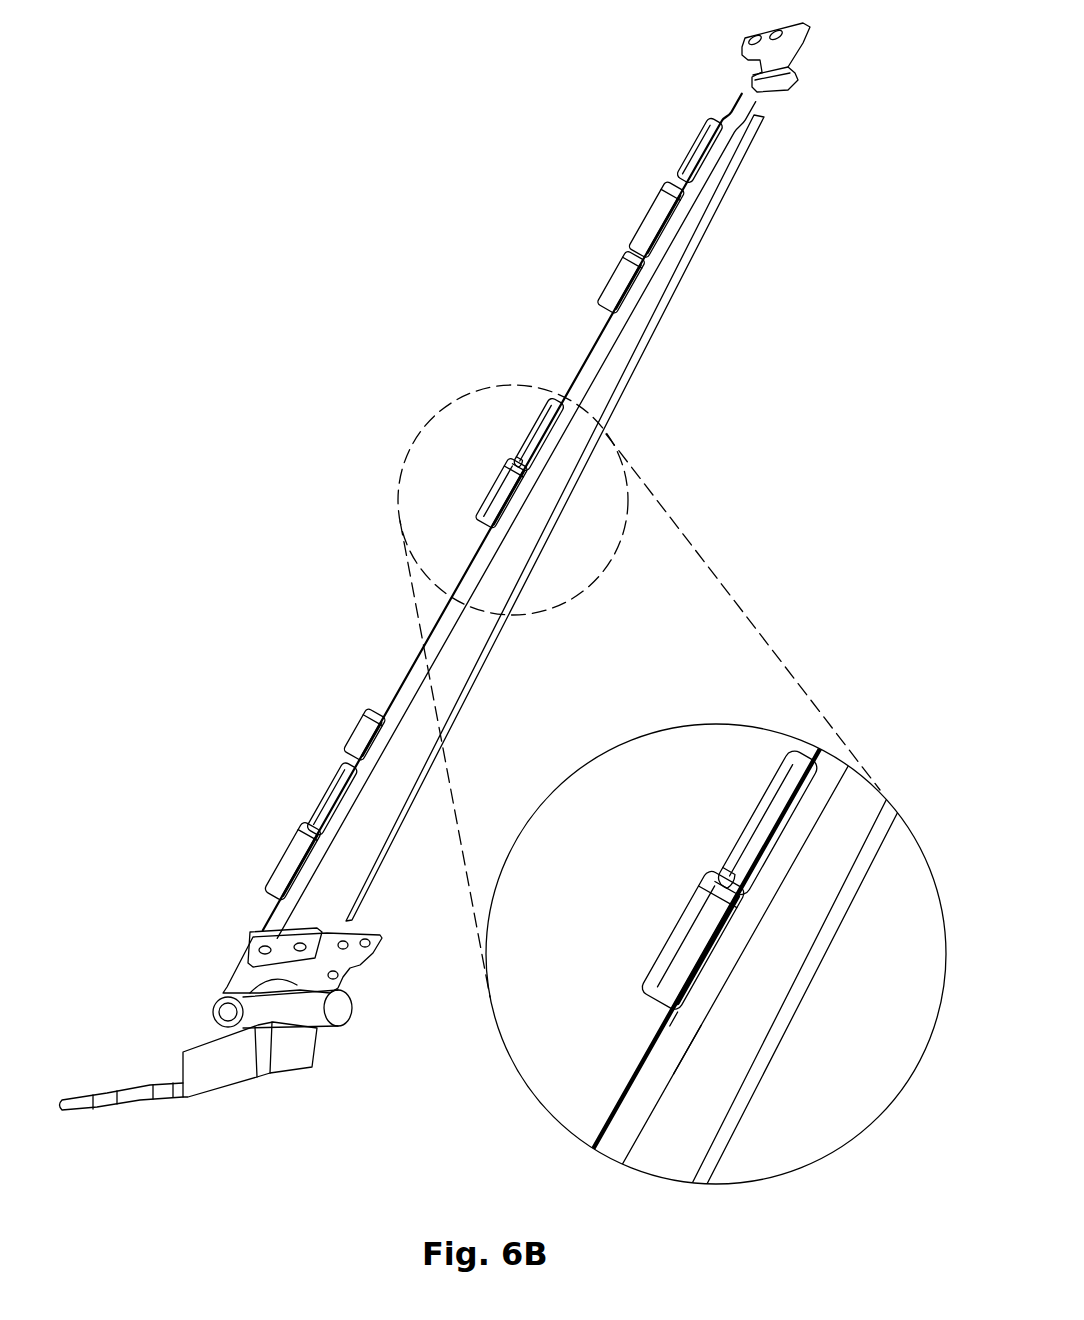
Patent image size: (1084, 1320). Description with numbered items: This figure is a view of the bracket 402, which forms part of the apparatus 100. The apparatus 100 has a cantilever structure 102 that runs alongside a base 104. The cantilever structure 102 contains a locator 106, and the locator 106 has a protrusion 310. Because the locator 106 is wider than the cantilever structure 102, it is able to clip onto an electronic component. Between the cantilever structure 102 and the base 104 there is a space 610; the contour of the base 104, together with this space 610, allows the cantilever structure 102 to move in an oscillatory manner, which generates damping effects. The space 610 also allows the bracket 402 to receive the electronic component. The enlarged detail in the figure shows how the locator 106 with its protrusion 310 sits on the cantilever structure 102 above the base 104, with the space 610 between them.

The bracket 402 is at (274, 134).
The apparatus 100 is at (615, 824).
The cantilever structure 102 is at (705, 890).
The base 104 is at (778, 994).
The locator 106 is at (662, 963).
The protrusion 310 is at (689, 944).
The space 610 is at (667, 1016).